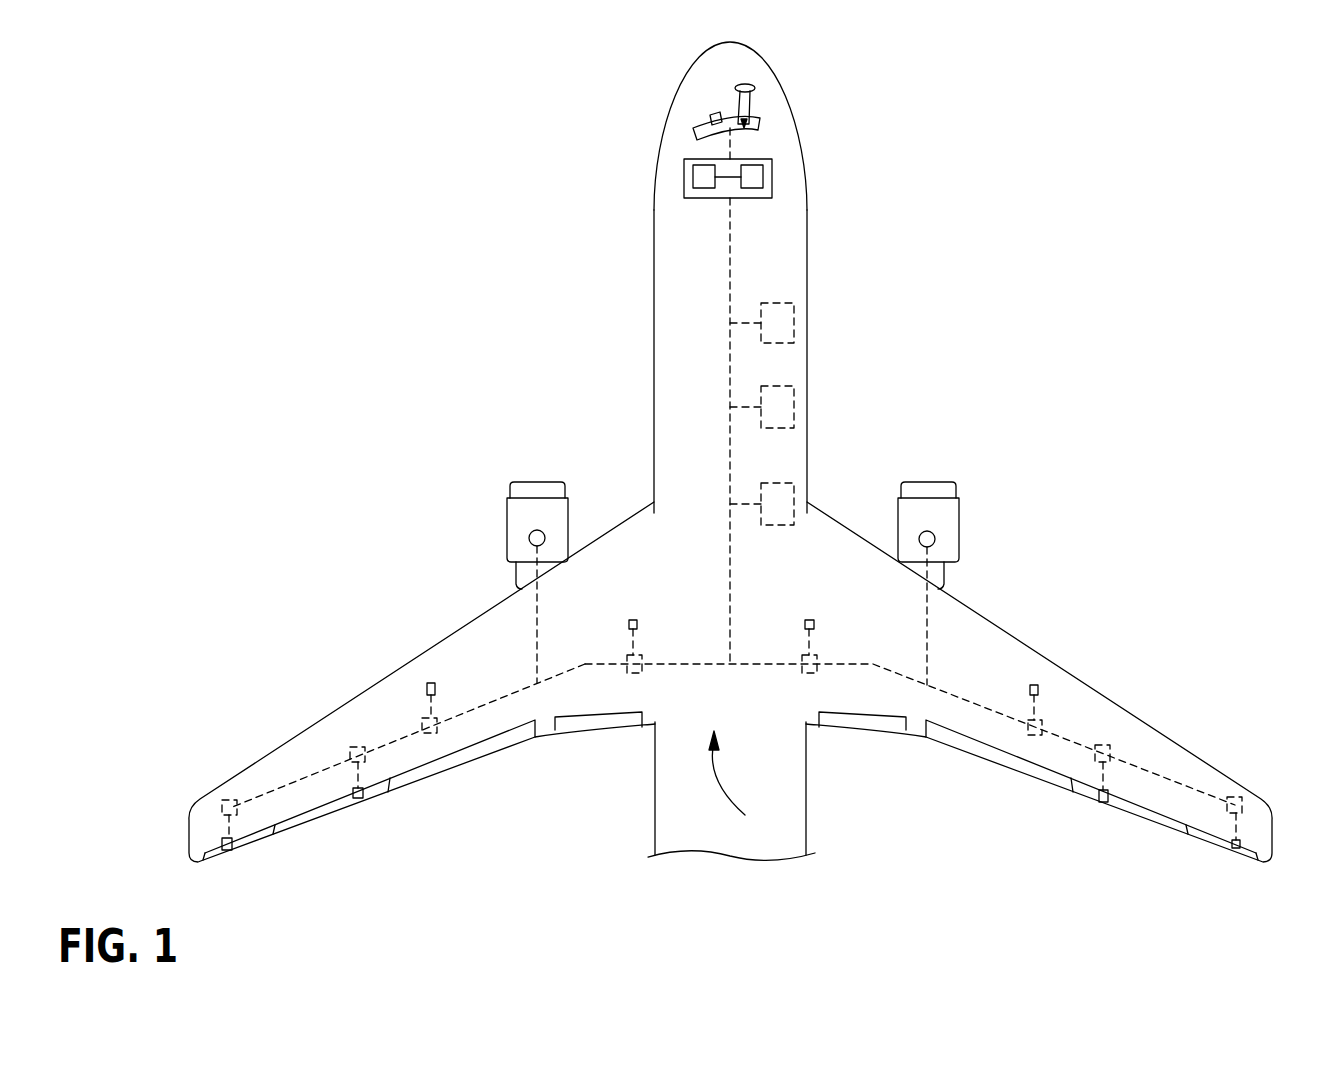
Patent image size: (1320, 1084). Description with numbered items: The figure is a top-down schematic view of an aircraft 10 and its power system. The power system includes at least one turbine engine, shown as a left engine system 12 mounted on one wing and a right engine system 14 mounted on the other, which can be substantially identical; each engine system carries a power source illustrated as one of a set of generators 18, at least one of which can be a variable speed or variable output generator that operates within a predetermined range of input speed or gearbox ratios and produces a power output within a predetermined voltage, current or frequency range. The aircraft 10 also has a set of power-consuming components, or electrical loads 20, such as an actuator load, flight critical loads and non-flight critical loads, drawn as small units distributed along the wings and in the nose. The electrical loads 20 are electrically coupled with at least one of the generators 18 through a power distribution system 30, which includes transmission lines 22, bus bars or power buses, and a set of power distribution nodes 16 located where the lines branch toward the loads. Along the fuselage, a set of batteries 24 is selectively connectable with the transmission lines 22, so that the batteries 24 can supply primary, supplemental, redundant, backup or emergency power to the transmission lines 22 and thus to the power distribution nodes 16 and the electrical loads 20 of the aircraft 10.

The aircraft 10 is at (551, 76).
The left engine system 12 is at (537, 492).
The right engine system 14 is at (938, 495).
The power distribution nodes 16 is at (634, 673).
The generators 18 is at (552, 535).
The electrical loads 20 is at (703, 190).
The transmission lines 22 is at (730, 376).
The batteries 24 is at (790, 334).
The power distribution system 30 is at (740, 785).